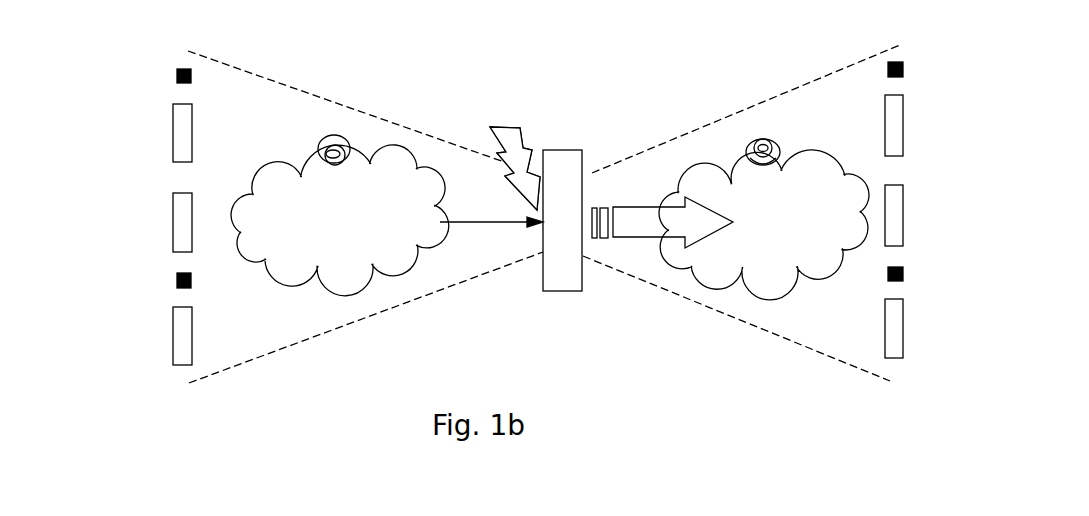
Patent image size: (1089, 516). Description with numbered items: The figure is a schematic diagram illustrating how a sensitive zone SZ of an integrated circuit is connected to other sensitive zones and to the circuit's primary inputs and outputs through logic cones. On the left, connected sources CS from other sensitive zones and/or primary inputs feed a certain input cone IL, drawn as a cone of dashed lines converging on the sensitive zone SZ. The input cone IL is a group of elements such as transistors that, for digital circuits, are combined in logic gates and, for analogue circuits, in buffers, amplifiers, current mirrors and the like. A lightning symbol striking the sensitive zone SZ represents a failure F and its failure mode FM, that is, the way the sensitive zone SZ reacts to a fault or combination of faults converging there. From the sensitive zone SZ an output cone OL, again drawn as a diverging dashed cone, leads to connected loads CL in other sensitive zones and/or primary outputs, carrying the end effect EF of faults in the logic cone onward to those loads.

The connected sources CS is at (127, 217).
The connected loads CL is at (964, 210).
The input cone IL is at (365, 220).
The output cone OL is at (741, 213).
The sensitive zone SZ is at (563, 193).
The failure F is at (514, 138).
The failure mode FM is at (515, 168).
The end effect EF is at (662, 207).